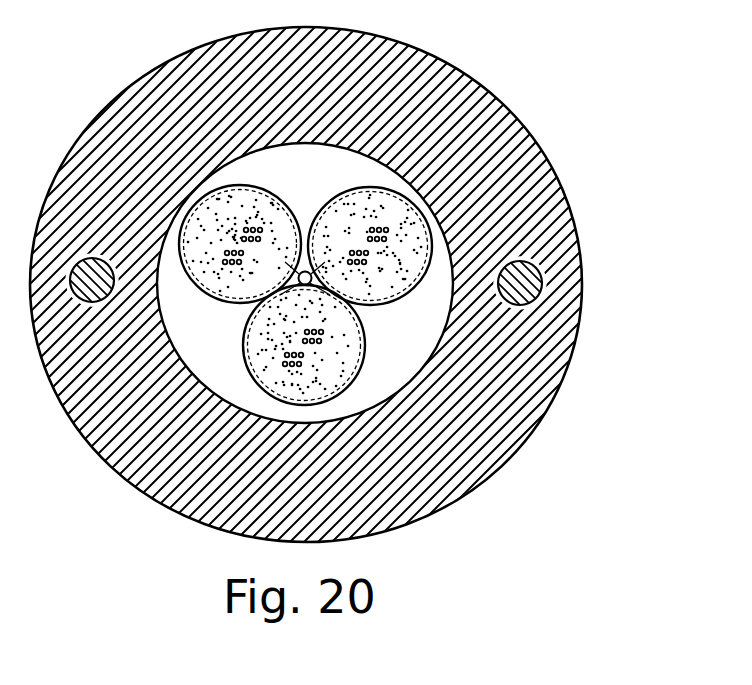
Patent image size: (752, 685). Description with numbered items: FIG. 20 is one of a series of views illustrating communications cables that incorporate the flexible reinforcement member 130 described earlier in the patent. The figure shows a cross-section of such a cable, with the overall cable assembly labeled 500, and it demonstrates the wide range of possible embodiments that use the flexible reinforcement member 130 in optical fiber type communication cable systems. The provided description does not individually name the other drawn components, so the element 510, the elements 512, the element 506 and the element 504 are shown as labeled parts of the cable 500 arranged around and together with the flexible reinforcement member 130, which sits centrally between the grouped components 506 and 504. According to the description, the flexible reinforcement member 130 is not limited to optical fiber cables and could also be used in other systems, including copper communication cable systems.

The fiber optic cable 500 is at (376, 290).
The cable jacket 510 is at (572, 233).
The strength member 512 is at (543, 281).
The buffer tube 506 is at (307, 280).
The optical fiber ribbons 504 is at (320, 344).
The flexible reinforcement member 130 is at (298, 281).